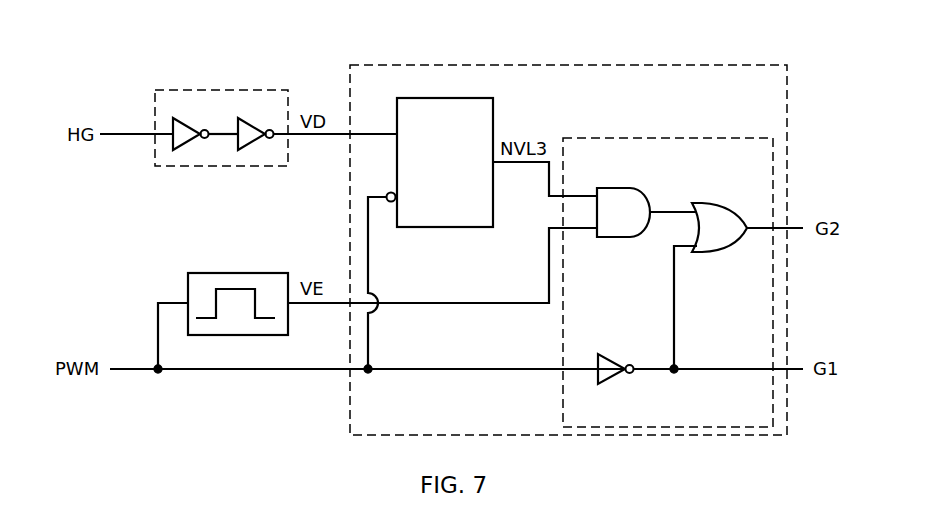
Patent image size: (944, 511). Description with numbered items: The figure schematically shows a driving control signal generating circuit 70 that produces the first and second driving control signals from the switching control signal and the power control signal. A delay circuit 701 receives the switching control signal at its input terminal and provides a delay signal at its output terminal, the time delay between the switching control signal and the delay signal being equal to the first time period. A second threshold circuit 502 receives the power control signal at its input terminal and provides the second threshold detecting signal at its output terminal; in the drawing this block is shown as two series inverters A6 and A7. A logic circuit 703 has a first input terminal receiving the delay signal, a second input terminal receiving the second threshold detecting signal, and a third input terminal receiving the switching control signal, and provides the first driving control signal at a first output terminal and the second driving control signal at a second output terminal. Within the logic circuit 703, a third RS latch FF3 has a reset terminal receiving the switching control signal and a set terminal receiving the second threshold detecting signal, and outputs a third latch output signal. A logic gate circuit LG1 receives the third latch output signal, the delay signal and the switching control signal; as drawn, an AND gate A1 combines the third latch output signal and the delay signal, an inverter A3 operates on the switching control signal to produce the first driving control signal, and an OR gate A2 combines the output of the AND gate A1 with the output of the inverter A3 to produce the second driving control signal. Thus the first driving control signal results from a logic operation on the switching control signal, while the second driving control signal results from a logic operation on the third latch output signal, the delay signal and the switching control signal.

The driving control signal generating circuit 70 is at (465, 39).
The logic circuit 703 is at (685, 92).
The delay circuit 701 is at (188, 280).
The second threshold circuit 502 is at (155, 105).
The third RS latch FF3 is at (440, 151).
The logic gate circuit LG1 is at (764, 162).
The AND gate A1 is at (623, 201).
The OR gate A2 is at (719, 216).
The inverter A3 is at (616, 359).
The inverter A6 is at (191, 124).
The inverter A7 is at (256, 124).